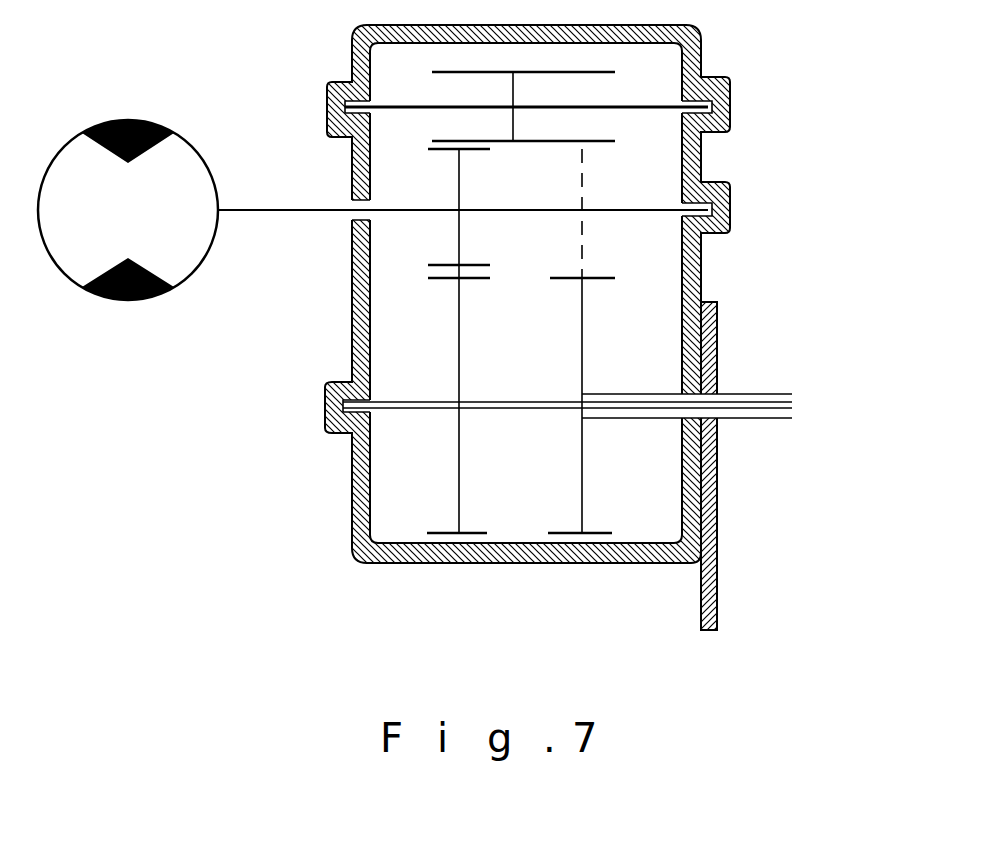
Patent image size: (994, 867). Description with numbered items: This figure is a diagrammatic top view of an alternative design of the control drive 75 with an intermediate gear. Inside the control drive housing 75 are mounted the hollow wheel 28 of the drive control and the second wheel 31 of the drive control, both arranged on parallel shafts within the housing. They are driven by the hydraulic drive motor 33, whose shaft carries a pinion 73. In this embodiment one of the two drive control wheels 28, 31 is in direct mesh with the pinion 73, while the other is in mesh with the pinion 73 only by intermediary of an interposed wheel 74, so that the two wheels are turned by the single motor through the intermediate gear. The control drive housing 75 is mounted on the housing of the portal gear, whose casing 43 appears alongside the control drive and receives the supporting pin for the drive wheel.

The hydraulic drive motor 33 is at (191, 130).
The interposed wheel 74 is at (526, 95).
The control drive housing 75 is at (728, 217).
The hollow wheel of the drive control 28 is at (596, 347).
The pinion 73 is at (446, 239).
The second wheel of the drive control 31 is at (447, 478).
The casing 43 is at (717, 560).